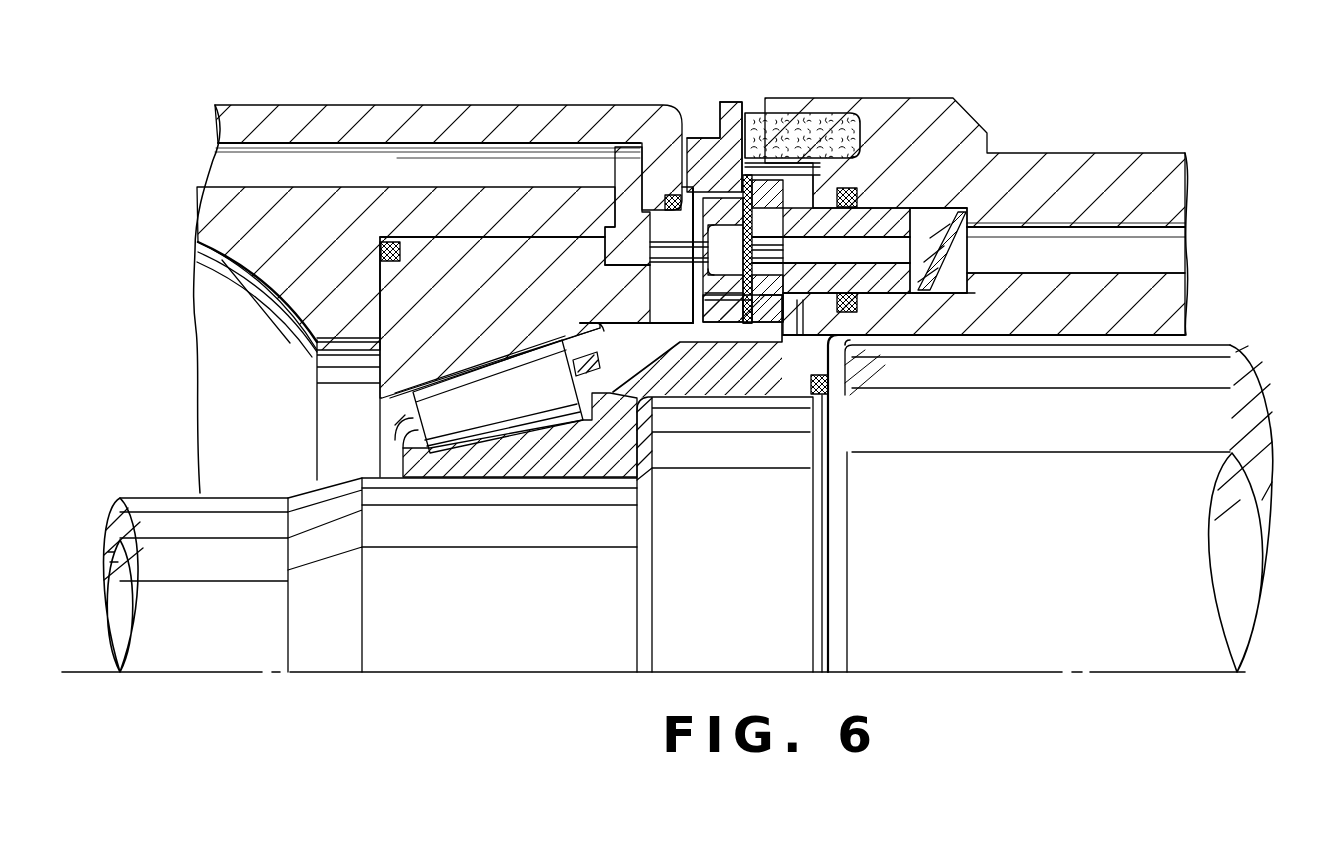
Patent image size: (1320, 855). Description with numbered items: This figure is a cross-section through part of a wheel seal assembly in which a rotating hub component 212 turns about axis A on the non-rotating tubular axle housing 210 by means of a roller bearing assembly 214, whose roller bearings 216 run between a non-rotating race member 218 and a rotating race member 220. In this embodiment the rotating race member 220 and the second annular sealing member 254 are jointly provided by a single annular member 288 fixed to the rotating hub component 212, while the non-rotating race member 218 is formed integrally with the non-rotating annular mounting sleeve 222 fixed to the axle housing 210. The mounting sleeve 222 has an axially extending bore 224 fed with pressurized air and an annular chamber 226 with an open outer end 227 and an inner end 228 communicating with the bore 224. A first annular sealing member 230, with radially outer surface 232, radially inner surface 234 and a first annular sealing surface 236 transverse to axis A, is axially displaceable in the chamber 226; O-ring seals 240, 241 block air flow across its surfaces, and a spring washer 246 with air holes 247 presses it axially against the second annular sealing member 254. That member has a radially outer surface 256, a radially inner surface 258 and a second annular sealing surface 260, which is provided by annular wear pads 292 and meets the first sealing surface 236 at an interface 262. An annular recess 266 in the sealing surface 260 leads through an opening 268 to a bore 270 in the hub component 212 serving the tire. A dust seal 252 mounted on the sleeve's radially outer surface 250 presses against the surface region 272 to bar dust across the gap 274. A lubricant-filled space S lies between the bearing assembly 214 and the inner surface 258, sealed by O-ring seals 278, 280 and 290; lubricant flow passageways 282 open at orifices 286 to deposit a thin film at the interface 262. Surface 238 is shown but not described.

The non-rotating tubular axle housing 210 is at (205, 497).
The rotating hub component 212 is at (250, 253).
The roller bearing assembly 214 is at (360, 418).
The roller bearings 216 is at (520, 428).
The non-rotating race member 218 is at (460, 465).
The rotating race member 220 is at (360, 380).
The non-rotating annular mounting sleeve 222 is at (1100, 165).
The axially extending bore 224 is at (1165, 245).
The annular chamber 226 is at (1000, 336).
The open outer end 227 is at (848, 385).
The inner end 228 is at (958, 282).
The first annular sealing member 230 is at (976, 206).
The radially outer surface 232 is at (934, 212).
The radially inner surface 234 is at (862, 296).
The first annular sealing surface 236 is at (738, 326).
The insert 238 is at (920, 318).
The O-ring seal 240 is at (852, 218).
The O-ring seal 241 is at (862, 330).
The spring washer 246 is at (958, 222).
The air holes 247 is at (942, 252).
The radially outer surface 250 is at (838, 130).
The dust seal 252 is at (812, 128).
The second annular sealing member 254 is at (730, 110).
The radially outer surface 256 is at (697, 140).
The radially inner surface 258 is at (603, 324).
The second annular sealing surface 260 is at (800, 322).
The interface 262 is at (750, 345).
The annular recess 266 is at (755, 261).
The opening 268 is at (643, 247).
The bore 270 is at (232, 173).
The radially outer surface region 272 is at (770, 130).
The gap 274 is at (753, 100).
The O-ring seal 278 is at (668, 200).
The O-ring seal 280 is at (835, 398).
The lubricant flow passageways 282 is at (670, 198).
The orifices 286 is at (846, 200).
The single annular member 288 is at (472, 252).
The O-ring seal 290 is at (387, 240).
The annular wear pads 292 is at (762, 186).
The space S is at (624, 366).
The axis A is at (492, 674).